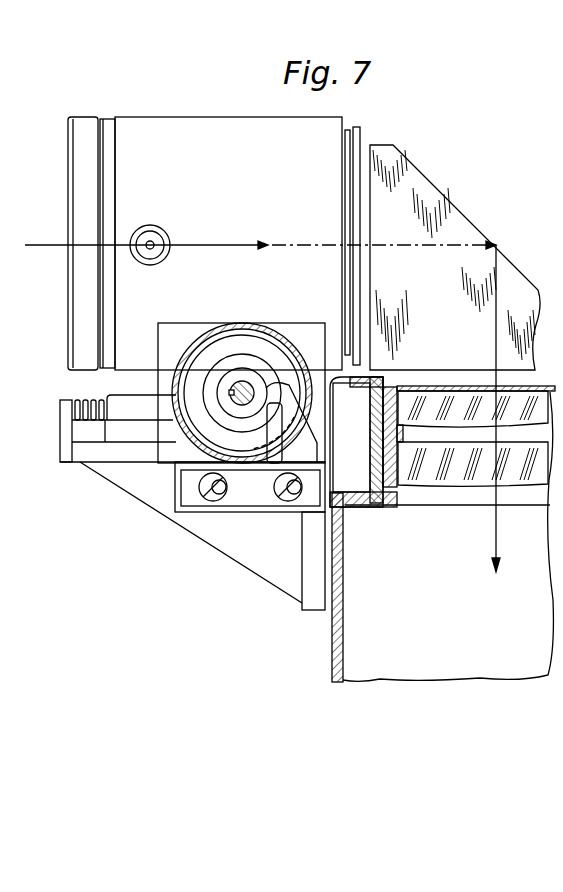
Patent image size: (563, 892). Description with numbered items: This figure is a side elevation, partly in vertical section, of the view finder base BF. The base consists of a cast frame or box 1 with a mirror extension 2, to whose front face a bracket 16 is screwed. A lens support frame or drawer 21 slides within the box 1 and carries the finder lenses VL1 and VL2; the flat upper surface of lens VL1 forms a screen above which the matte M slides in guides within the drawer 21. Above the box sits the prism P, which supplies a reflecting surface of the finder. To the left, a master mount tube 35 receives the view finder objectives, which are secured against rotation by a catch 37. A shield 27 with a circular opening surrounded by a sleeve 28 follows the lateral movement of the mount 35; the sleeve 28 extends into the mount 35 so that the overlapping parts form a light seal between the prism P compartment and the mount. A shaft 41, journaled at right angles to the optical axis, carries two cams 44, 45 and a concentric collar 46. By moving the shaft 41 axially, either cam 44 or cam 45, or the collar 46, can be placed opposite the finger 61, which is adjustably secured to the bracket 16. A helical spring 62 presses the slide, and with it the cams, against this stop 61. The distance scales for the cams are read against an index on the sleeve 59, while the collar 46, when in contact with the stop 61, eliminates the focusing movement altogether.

The master mount tube 35 is at (164, 127).
The catch 37 is at (165, 238).
The sleeve 28 is at (347, 130).
The shield 27 is at (358, 140).
The prism P is at (457, 228).
The sleeve 59 is at (214, 330).
The cam 44 is at (240, 345).
The cam 45 is at (250, 380).
The shaft 41 is at (246, 405).
The collar 46 is at (266, 386).
The bracket 16 is at (258, 548).
The helical spring 62 is at (82, 398).
The finger 61 is at (250, 487).
The cast frame or box 1 is at (380, 463).
The lens support frame or drawer 21 is at (388, 480).
The lens VL1 is at (410, 378).
The lens VL2 is at (483, 478).
The matte M is at (448, 380).
The mirror extension 2 is at (337, 668).
The view finder base BF is at (318, 641).